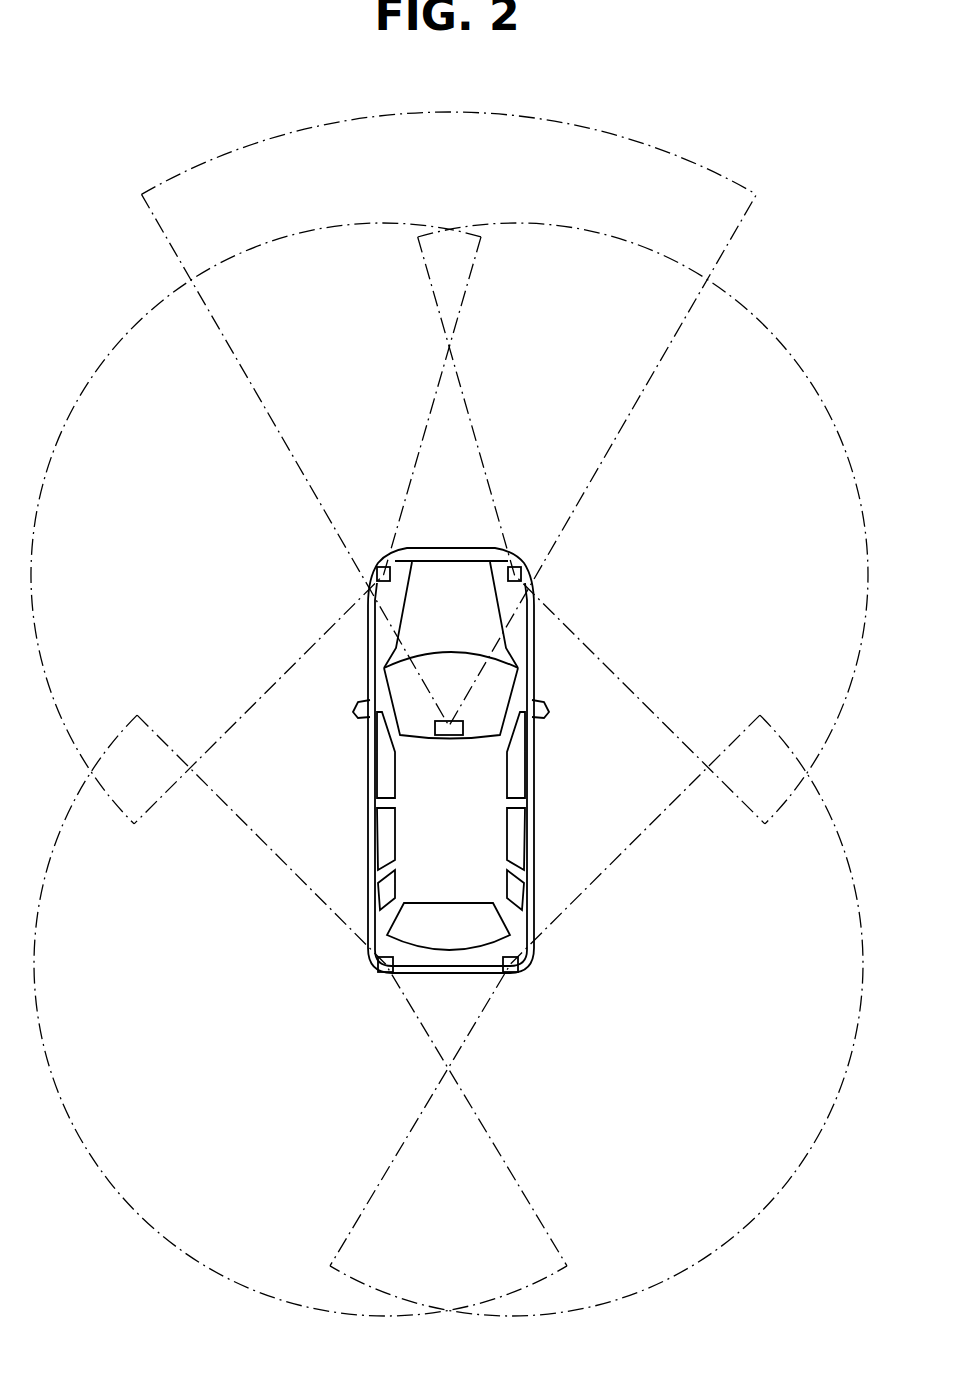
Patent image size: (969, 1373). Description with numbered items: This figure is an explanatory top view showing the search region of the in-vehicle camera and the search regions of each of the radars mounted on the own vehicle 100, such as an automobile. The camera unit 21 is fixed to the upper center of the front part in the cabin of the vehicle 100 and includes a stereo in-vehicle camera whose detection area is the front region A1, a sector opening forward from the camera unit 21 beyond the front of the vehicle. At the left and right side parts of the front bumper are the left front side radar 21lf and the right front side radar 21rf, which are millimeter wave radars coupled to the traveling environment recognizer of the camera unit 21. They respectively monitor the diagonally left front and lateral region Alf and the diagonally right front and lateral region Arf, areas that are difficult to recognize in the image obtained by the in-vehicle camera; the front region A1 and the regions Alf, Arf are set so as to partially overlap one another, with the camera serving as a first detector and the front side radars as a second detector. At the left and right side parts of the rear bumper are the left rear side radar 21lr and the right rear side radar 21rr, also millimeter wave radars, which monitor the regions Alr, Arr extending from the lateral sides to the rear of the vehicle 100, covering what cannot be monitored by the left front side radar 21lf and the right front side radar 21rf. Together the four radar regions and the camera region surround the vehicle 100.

The vehicle 100 is at (369, 786).
The camera unit 21 is at (449, 737).
The left front side radar 21lf is at (383, 567).
The right front side radar 21rf is at (515, 567).
The left rear side radar 21lr is at (386, 975).
The right rear side radar 21rr is at (510, 975).
The front region A1 is at (206, 154).
The diagonally left front and lateral region Alf is at (83, 394).
The diagonally right front and lateral region Arf is at (820, 394).
The left rear region Alr is at (103, 1180).
The right rear region Arr is at (787, 1182).